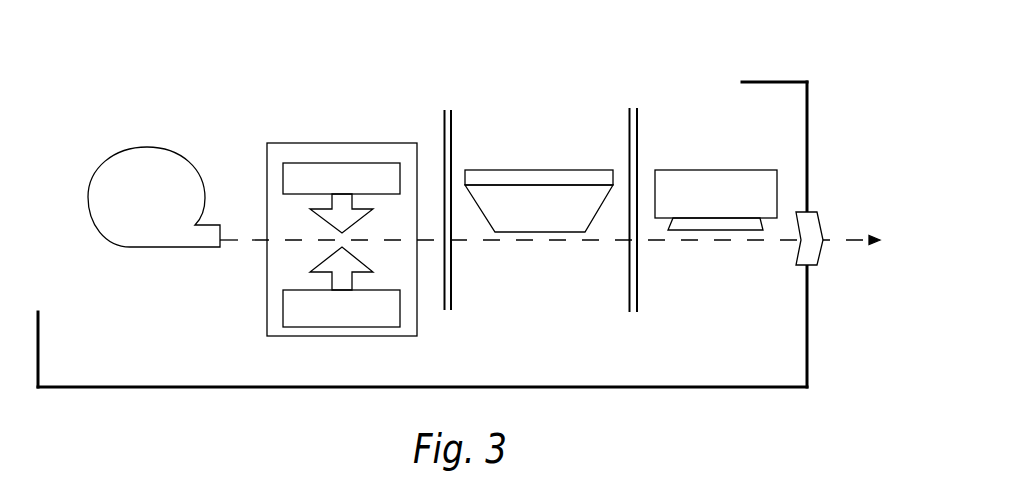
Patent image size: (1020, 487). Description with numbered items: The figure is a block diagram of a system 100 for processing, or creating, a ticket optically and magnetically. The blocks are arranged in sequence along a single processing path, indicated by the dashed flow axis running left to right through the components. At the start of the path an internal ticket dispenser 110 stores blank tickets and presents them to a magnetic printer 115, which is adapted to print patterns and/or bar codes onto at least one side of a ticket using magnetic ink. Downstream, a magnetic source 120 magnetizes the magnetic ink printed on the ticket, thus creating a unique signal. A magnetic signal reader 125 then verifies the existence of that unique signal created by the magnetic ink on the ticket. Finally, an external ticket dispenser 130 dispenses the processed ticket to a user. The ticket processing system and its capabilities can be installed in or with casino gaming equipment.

The system 100 is at (769, 61).
The internal ticket dispenser 110 is at (112, 157).
The magnetic printer 115 is at (340, 143).
The magnetic source 120 is at (545, 170).
The magnetic signal reader 125 is at (717, 170).
The external ticket dispenser 130 is at (813, 212).